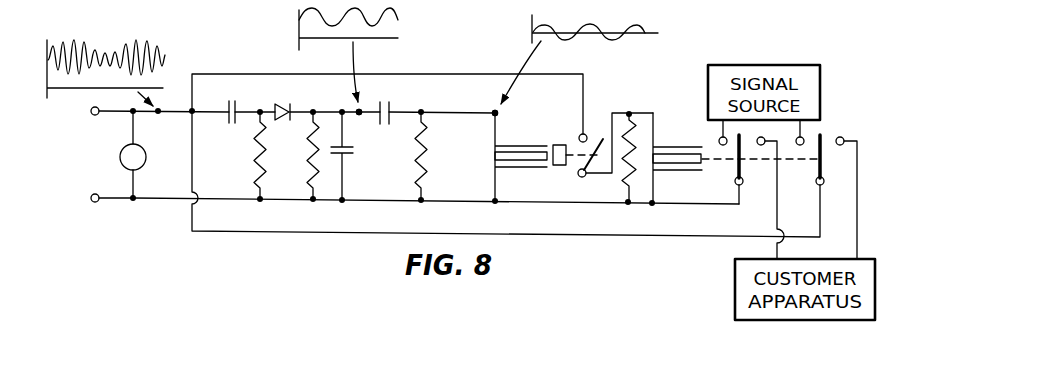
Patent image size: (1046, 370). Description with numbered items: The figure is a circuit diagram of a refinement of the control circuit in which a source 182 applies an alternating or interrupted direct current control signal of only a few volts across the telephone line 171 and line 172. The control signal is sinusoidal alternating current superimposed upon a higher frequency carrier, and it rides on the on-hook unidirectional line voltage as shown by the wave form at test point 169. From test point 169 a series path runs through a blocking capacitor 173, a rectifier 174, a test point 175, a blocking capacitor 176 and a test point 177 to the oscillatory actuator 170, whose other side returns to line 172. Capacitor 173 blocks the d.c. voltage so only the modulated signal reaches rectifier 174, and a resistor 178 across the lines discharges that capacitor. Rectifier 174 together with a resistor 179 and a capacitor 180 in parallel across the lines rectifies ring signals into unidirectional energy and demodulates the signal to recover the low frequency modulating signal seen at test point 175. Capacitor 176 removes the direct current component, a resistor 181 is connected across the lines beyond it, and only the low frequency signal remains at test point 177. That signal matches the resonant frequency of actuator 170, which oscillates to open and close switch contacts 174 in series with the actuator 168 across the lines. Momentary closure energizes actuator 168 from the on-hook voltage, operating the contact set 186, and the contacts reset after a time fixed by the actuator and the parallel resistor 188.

The telephone line 171 is at (104, 118).
The line 172 is at (118, 203).
The source for an alternating or interrupted direct current control signal 182 is at (119, 160).
The test point 169 is at (157, 119).
The blocking capacitor 173 is at (231, 117).
The rectifier 174 is at (284, 104).
The test point 175 is at (360, 117).
The blocking capacitor 176 is at (392, 108).
The test point 177 is at (498, 116).
The resistor 178 is at (256, 156).
The resistor 179 is at (306, 137).
The capacitor 180 is at (350, 157).
The resistor 181 is at (430, 170).
The oscillatory actuator 170 is at (517, 145).
The resistor 188 is at (631, 140).
The actuator of the double-pole, double-throw switch 168 is at (676, 146).
The contact set 186 is at (871, 167).